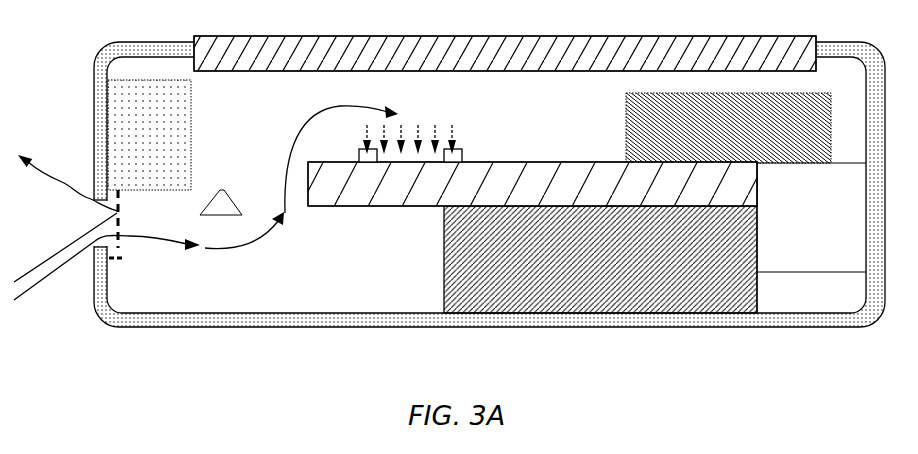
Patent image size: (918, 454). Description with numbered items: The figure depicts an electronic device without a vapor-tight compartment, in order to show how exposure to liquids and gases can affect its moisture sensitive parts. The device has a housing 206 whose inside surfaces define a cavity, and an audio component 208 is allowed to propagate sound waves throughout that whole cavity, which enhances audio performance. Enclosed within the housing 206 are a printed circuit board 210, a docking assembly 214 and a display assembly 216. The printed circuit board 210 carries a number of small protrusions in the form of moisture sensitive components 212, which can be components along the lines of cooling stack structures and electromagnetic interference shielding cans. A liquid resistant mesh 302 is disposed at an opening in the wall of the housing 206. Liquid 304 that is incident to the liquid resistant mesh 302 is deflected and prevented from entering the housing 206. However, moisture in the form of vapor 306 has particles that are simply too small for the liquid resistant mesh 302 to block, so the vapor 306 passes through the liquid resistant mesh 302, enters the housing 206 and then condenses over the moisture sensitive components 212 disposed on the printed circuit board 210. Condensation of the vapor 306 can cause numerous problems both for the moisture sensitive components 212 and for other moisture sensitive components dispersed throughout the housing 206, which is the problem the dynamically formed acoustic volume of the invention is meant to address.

The housing 206 is at (93, 62).
The audio component 208 is at (232, 194).
The printed circuit board 210 is at (402, 191).
The moisture sensitive components 212 is at (463, 155).
The docking assembly 214 is at (132, 143).
The display assembly 216 is at (506, 63).
The liquid resistant mesh 302 is at (119, 212).
The liquid 304 is at (63, 218).
The vapor 306 is at (206, 207).